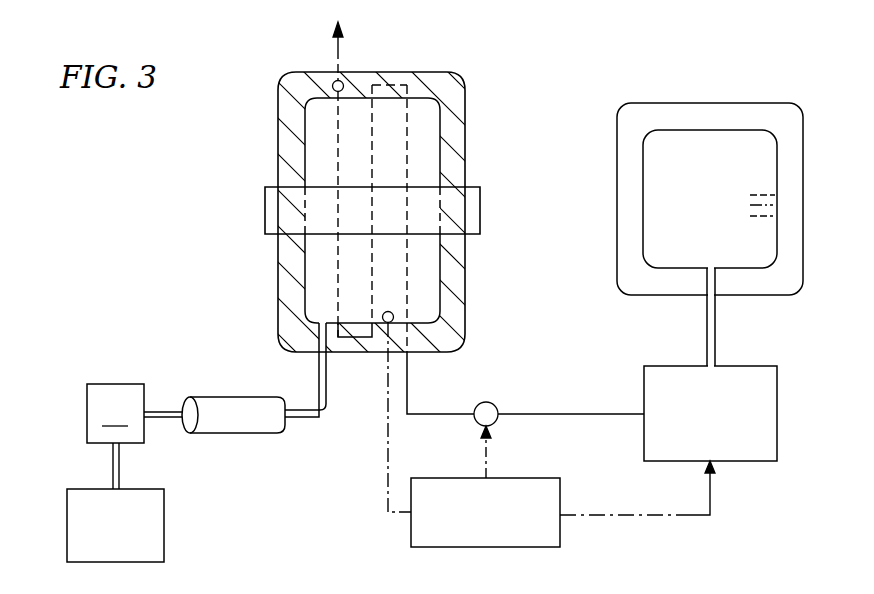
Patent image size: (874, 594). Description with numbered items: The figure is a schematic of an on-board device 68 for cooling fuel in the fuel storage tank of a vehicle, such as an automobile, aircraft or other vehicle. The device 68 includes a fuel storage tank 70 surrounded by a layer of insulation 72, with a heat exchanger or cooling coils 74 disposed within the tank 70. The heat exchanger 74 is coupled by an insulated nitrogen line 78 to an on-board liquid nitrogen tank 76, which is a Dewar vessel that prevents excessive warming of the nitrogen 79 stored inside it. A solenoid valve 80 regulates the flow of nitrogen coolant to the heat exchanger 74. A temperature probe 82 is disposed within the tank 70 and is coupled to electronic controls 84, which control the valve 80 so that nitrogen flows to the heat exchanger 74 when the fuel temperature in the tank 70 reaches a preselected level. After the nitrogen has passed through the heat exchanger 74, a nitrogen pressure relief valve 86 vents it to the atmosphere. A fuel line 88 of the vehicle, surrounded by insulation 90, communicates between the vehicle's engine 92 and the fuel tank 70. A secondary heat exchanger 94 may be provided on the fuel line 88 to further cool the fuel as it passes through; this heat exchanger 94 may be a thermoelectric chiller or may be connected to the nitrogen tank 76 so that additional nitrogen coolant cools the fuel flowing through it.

The on-board device 68 is at (470, 74).
The fuel storage tank 70 is at (442, 136).
The layer of insulation 72 is at (456, 165).
The heat exchanger 74 is at (408, 251).
The on-board liquid nitrogen tank 76 is at (723, 132).
The insulated nitrogen line 78 is at (421, 413).
The nitrogen 79 is at (774, 210).
The solenoid valve 80 is at (776, 384).
The temperature probe 82 is at (389, 311).
The electronic controls 84 is at (413, 533).
The nitrogen pressure relief valve 86 is at (343, 84).
The fuel line 88 is at (327, 405).
The insulation 90 is at (230, 427).
The engine 92 is at (68, 531).
The secondary heat exchanger 94 is at (134, 436).